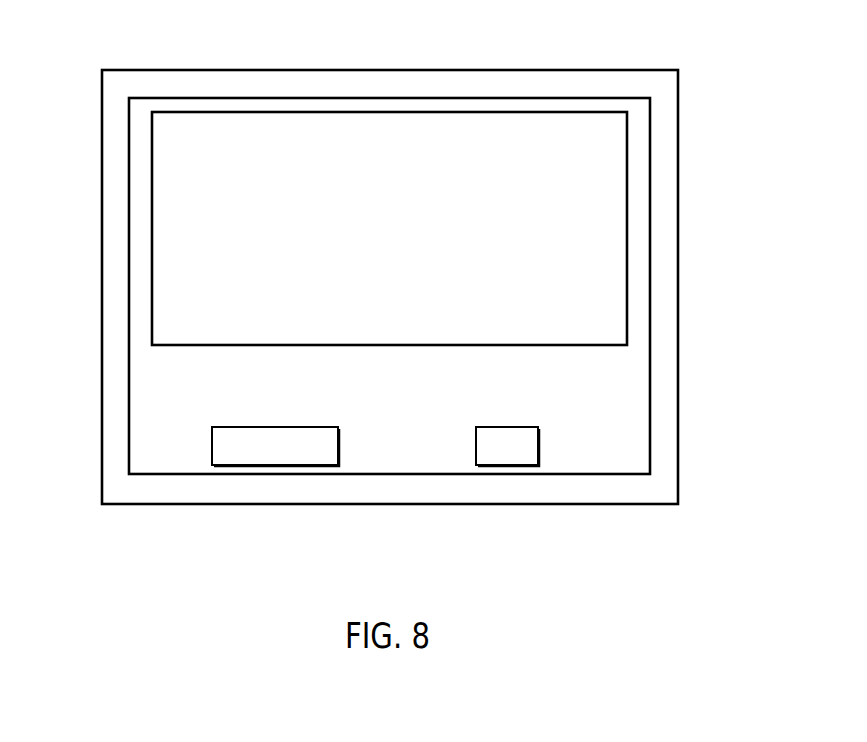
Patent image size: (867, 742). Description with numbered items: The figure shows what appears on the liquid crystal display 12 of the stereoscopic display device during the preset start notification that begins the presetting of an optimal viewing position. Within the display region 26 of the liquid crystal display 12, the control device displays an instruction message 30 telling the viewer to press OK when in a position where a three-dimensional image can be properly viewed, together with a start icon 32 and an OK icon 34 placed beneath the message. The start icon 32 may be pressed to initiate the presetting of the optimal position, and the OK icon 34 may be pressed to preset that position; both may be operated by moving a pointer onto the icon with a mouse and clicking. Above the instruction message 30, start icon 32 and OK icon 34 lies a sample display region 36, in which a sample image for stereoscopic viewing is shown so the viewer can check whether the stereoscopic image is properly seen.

The liquid crystal display 12 is at (678, 70).
The display region 26 is at (633, 437).
The instruction message 30 is at (142, 355).
The start icon 32 is at (281, 467).
The OK icon 34 is at (508, 467).
The sample display region 36 is at (172, 203).